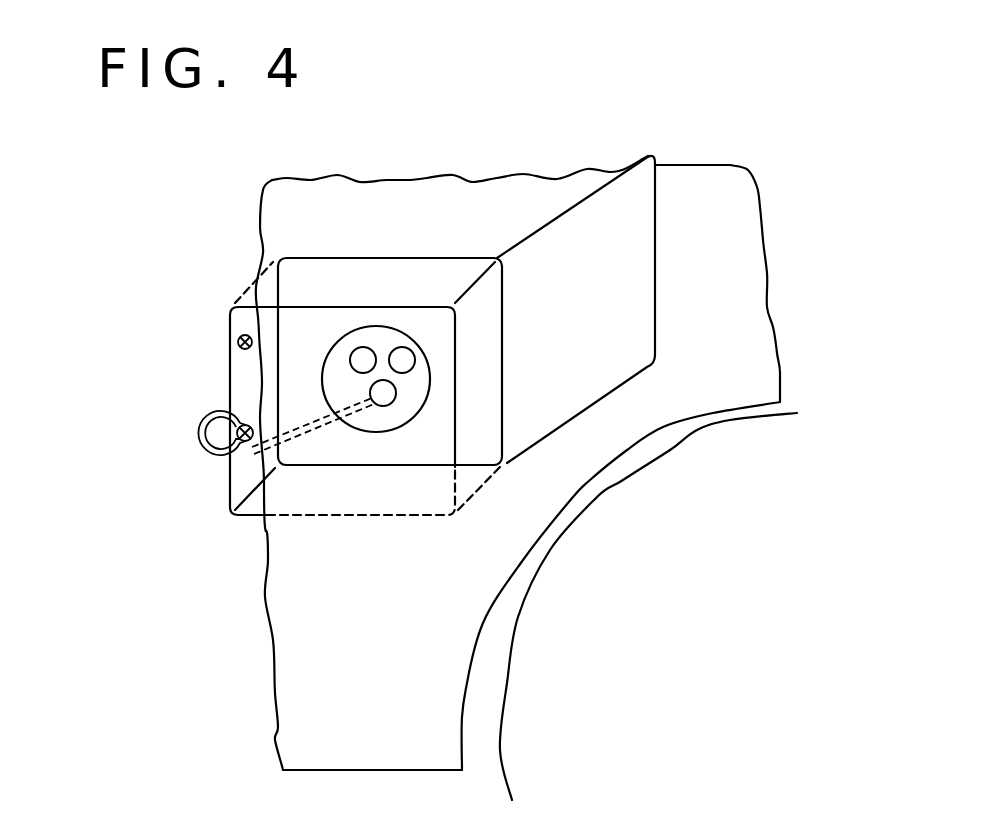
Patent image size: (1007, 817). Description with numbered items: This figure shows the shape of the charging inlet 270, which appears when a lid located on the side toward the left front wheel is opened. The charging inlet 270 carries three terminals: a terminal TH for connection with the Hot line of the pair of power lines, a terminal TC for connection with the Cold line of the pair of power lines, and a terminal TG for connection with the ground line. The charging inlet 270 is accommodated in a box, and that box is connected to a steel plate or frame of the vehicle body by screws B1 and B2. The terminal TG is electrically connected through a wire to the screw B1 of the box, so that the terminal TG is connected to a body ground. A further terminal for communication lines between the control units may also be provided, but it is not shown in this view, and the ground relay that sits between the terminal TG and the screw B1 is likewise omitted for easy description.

The charging inlet 270 is at (430, 280).
The terminal TH is at (358, 347).
The terminal TC is at (398, 347).
The terminal TG is at (371, 393).
The screw B1 is at (237, 433).
The screw B2 is at (238, 342).